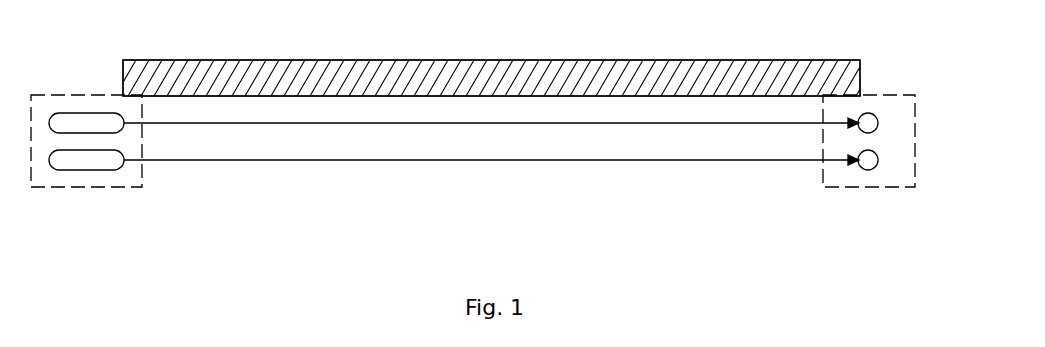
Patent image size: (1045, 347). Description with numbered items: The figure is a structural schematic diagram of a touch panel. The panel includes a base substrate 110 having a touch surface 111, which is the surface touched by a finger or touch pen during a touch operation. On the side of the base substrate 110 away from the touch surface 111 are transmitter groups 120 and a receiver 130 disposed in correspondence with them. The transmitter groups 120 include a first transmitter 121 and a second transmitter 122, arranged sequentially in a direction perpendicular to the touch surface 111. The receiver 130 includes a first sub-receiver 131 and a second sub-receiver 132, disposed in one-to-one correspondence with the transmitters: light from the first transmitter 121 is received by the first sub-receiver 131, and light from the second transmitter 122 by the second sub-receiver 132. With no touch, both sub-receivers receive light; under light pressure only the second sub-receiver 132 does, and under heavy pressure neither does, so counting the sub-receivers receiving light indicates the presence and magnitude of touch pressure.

The base substrate 110 is at (242, 60).
The touch surface 111 is at (418, 60).
The transmitter groups 120 is at (37, 188).
The first transmitter 121 is at (102, 124).
The second transmitter 122 is at (73, 161).
The receiver 130 is at (832, 188).
The first sub-receiver 131 is at (873, 113).
The second sub-receiver 132 is at (872, 169).